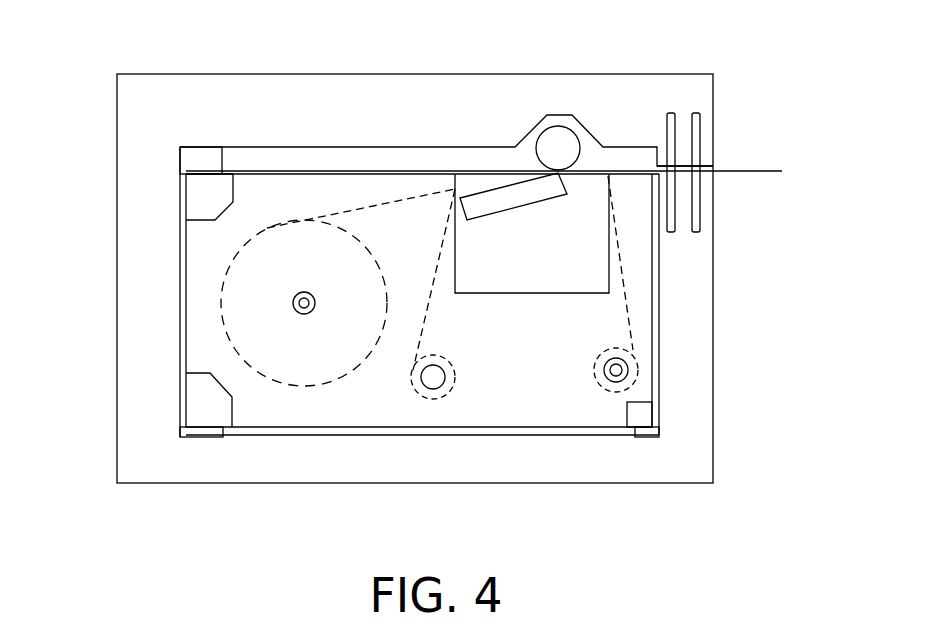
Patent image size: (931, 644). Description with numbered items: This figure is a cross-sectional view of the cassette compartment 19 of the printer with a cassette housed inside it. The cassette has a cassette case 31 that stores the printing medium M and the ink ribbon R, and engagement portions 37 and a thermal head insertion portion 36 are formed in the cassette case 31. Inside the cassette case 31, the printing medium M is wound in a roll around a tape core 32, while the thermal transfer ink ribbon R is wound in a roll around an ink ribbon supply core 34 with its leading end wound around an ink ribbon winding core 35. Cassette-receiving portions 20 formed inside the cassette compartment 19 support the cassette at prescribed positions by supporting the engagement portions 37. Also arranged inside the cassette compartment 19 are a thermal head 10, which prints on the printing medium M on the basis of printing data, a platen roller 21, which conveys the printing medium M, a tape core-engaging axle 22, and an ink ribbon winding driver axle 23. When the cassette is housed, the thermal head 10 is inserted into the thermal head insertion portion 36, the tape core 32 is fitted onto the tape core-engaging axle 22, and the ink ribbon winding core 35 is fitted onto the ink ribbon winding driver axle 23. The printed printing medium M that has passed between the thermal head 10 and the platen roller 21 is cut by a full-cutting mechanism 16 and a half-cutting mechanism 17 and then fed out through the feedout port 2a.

The cassette compartment 19 is at (187, 118).
The cassette-receiving portions 20 is at (188, 158).
The engagement portions 37 is at (200, 187).
The cassette case 31 is at (287, 174).
The printing medium M is at (413, 195).
The thermal head 10 is at (497, 187).
The platen roller 21 is at (555, 127).
The thermal head insertion portion 36 is at (573, 212).
The full-cutting mechanism 16 is at (680, 167).
The half-cutting mechanism 17 is at (710, 153).
The feedout port 2a is at (727, 180).
The ink ribbon R is at (425, 320).
The tape core 32 is at (293, 300).
The tape core-engaging axle 22 is at (293, 308).
The ink ribbon supply core 34 is at (435, 386).
The ink ribbon winding driver axle 23 is at (614, 382).
The ink ribbon winding core 35 is at (628, 370).